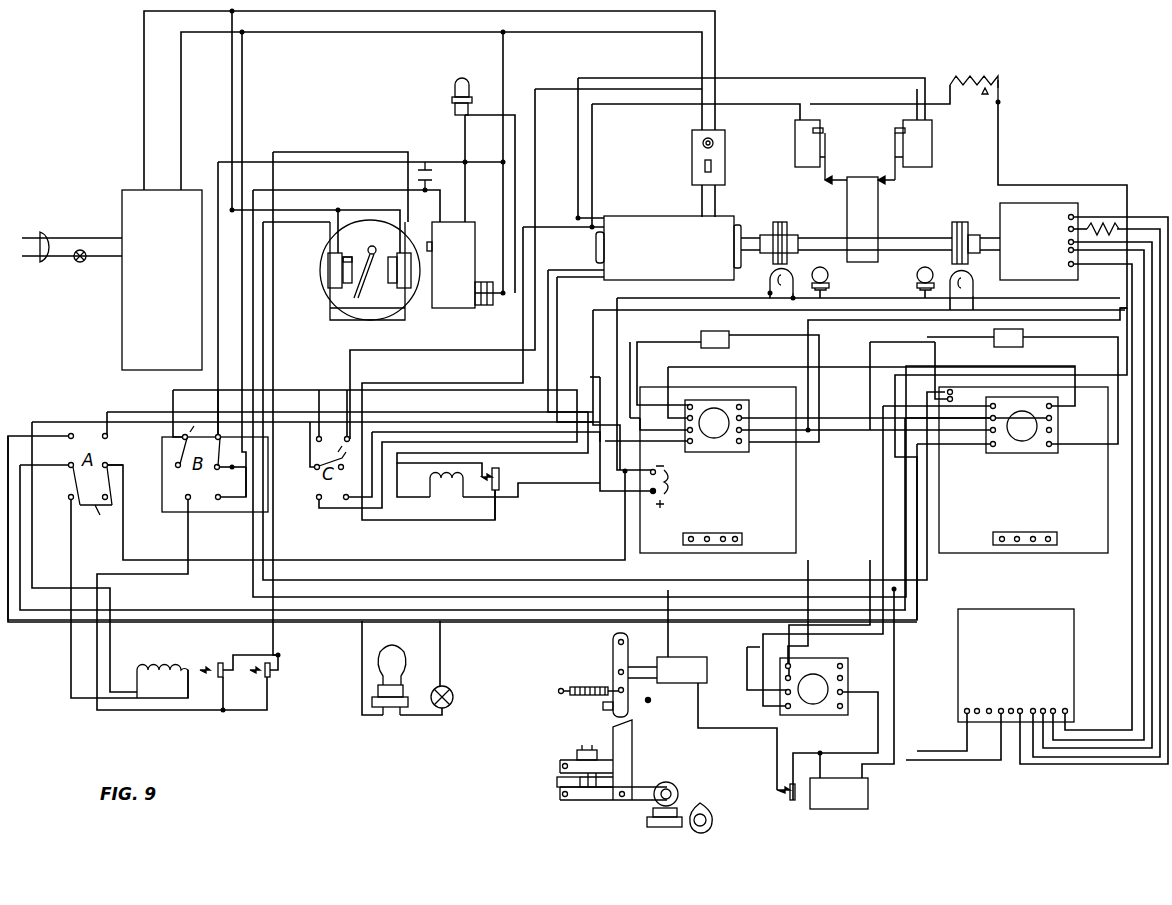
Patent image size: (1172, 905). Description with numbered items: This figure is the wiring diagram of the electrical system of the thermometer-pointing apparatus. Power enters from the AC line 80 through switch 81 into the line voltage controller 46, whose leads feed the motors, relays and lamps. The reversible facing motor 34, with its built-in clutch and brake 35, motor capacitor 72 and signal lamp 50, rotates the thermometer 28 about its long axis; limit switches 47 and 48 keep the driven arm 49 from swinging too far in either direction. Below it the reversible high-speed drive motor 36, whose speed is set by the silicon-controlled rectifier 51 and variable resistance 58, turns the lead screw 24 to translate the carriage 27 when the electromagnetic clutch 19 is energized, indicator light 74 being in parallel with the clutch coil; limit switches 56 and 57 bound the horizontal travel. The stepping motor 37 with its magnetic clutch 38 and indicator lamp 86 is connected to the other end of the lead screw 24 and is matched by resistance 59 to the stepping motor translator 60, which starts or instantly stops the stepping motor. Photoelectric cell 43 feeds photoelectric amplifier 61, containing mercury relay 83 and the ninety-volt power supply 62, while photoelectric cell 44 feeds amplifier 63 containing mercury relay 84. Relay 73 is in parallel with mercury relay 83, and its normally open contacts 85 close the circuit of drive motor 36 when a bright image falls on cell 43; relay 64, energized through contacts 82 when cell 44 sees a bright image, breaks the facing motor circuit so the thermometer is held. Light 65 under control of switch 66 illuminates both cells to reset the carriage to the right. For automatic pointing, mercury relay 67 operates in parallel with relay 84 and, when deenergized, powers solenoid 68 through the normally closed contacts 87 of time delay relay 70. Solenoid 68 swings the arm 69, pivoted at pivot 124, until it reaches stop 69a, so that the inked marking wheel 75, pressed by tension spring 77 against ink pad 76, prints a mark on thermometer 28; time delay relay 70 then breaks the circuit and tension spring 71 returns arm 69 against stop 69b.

The AC line 80 is at (40, 262).
The switch 81 is at (82, 262).
The line voltage controller 46 is at (162, 280).
The reversible facing gear motor 34 is at (470, 200).
The limit switch 47 is at (334, 270).
The limit switch 48 is at (405, 285).
The driven arm 49 is at (363, 300).
The clutch and brake 35 is at (484, 306).
The motor capacitor 72 is at (428, 152).
The signal lamp 50 is at (470, 70).
The silicon-controlled rectifier 51 is at (692, 158).
The reversible high-speed drive motor 36 is at (636, 218).
The clutch 19 is at (788, 220).
The lead screw 24 is at (818, 236).
The carriage 27 is at (878, 205).
The limit switch 56 is at (795, 140).
The limit switch 57 is at (932, 140).
The variable resistance 58 is at (982, 72).
The magnetic clutch 38 is at (962, 220).
The stepping motor 37 is at (1040, 203).
The matching resistance 59 is at (1100, 220).
The indicator light 74 is at (828, 270).
The indicator lamp 86 is at (915, 268).
The photoelectric cell 43 is at (729, 342).
The photoelectric cell 44 is at (1023, 338).
The mercury relay 83 is at (720, 452).
The mercury relay 84 is at (1005, 453).
The photoelectric amplifier 61 is at (757, 511).
The photoelectric amplifier 63 is at (1050, 511).
The power supply 62 is at (672, 487).
The contacts 85 is at (500, 470).
The relay 73 is at (448, 498).
The relay 64 is at (162, 675).
The contacts 82 is at (226, 677).
The light 65 is at (400, 648).
The switch 66 is at (452, 690).
The pivot 124 is at (614, 642).
The solenoid 68 is at (683, 657).
The tension spring 71 is at (584, 672).
The stop 69b is at (603, 706).
The stop 69a is at (648, 700).
The arm 69 is at (622, 750).
The tension spring 77 is at (557, 781).
The inked marking wheel 75 is at (676, 786).
The ink pad 76 is at (665, 828).
The thermometer 28 is at (712, 808).
The mercury relay 67 is at (815, 708).
The normally closed contacts 87 is at (788, 802).
The time delay relay 70 is at (850, 810).
The stepping motor translator 60 is at (1040, 609).